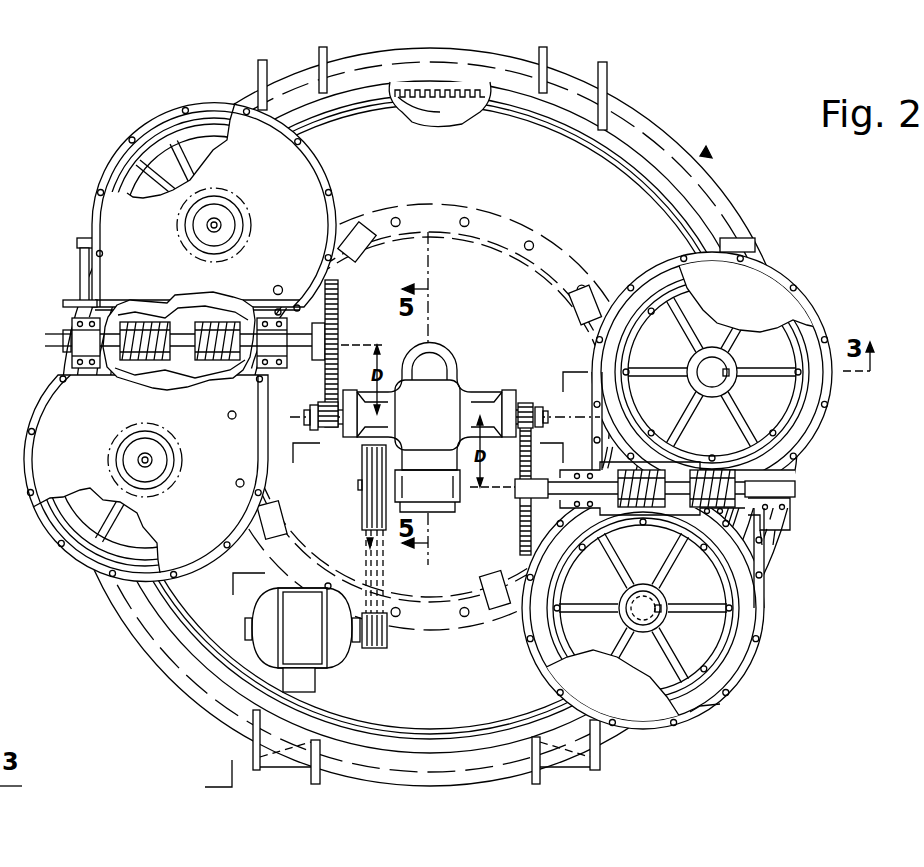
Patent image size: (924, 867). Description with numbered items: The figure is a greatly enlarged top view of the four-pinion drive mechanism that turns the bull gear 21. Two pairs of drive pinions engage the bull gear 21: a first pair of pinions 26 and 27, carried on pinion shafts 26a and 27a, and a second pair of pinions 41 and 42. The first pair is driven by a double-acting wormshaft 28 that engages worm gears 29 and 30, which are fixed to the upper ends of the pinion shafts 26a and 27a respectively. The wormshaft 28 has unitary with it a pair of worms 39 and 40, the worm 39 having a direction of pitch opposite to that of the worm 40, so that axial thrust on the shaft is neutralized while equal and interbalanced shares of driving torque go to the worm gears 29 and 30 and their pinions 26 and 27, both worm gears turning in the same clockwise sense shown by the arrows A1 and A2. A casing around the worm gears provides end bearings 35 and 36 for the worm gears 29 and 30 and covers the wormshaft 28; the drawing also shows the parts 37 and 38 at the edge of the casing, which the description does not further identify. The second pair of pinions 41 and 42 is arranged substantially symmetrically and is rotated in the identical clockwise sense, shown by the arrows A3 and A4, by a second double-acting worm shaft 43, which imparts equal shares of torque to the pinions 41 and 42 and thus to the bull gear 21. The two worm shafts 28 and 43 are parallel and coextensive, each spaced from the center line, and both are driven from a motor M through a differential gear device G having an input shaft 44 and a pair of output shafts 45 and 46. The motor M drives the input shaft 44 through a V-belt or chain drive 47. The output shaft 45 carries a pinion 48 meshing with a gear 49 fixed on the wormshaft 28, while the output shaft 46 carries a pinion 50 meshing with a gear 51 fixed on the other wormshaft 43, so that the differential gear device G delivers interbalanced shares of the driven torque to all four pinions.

The bull gear 21 is at (440, 104).
The drive pinion 26 is at (712, 372).
The pinion shaft 26a is at (714, 380).
The drive pinion 27 is at (643, 608).
The pinion shaft 27a is at (666, 619).
The double-acting wormshaft 28 is at (797, 488).
The worm gear 29 is at (725, 372).
The worm gear 30 is at (748, 617).
The end bearing 35 is at (788, 513).
The end bearing 36 is at (663, 463).
The mounting bracket 37 is at (800, 322).
The mounting bracket 38 is at (700, 708).
The worm 39 is at (715, 507).
The worm 40 is at (640, 470).
The drive pinion 41 is at (241, 225).
The drive pinion 42 is at (153, 446).
The second double-acting worm shaft 43 is at (305, 358).
The input shaft 44 is at (360, 487).
The output shaft 45 is at (540, 405).
The output shaft 46 is at (308, 418).
The V-belt or chain drive 47 is at (364, 552).
The pinion 48 is at (527, 401).
The gear 49 is at (520, 527).
The pinion 50 is at (330, 428).
The gear 51 is at (338, 310).
The differential gear device G is at (450, 352).
The motor M is at (335, 670).
The arrow A1 is at (662, 332).
The arrow A2 is at (582, 640).
The arrow A3 is at (273, 195).
The arrow A4 is at (172, 518).